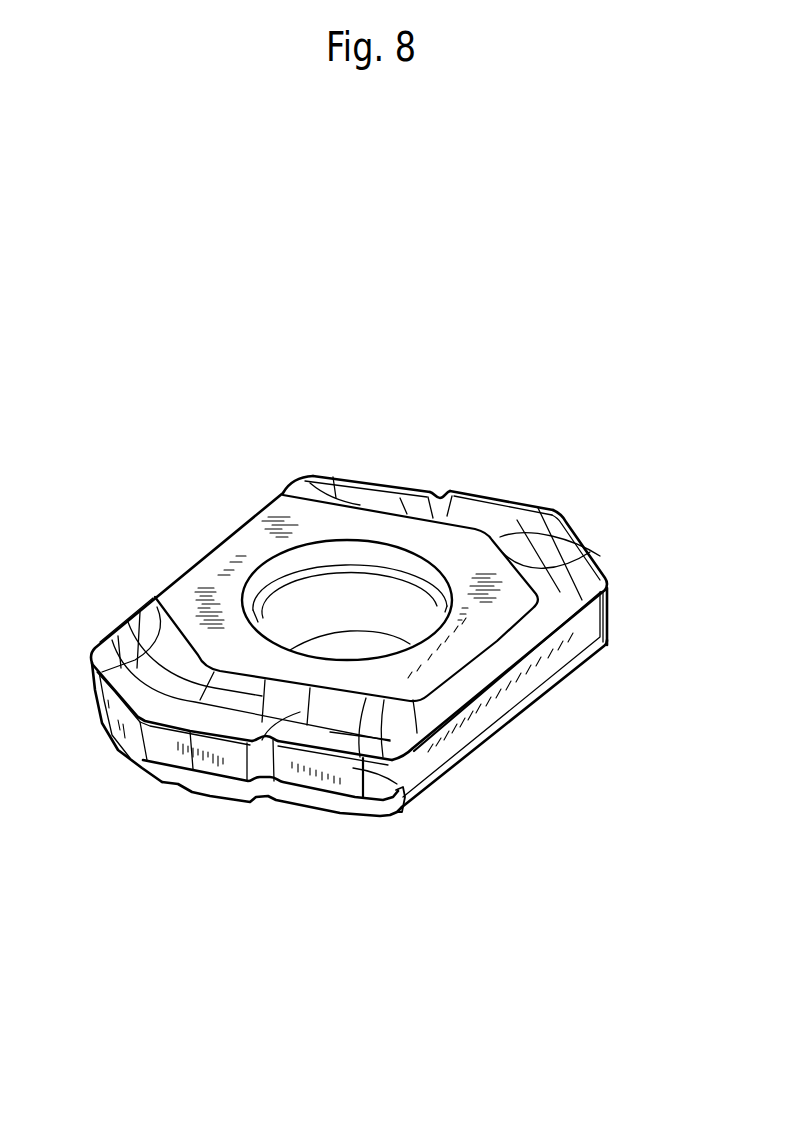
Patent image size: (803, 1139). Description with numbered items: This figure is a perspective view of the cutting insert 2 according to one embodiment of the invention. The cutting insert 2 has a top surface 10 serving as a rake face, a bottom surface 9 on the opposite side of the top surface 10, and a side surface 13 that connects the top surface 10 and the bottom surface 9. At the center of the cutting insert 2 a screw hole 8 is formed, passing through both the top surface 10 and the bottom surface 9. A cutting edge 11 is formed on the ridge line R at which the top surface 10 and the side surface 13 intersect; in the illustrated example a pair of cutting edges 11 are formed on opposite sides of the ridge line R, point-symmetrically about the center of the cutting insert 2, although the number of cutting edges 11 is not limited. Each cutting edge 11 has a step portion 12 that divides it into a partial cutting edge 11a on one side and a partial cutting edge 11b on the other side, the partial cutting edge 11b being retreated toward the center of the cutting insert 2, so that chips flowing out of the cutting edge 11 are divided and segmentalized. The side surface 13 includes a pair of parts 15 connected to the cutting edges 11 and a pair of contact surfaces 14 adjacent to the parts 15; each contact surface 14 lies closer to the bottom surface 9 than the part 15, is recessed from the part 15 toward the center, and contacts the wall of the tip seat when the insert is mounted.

The cutting insert 2 is at (156, 534).
The screw hole 8 is at (265, 584).
The bottom surface 9 is at (482, 735).
The top surface 10 is at (493, 558).
The cutting edge 11 is at (602, 458).
The partial cutting edge 11a is at (508, 498).
The partial cutting edge 11b is at (373, 482).
The step portion 12 is at (440, 490).
The side surface 13 is at (548, 692).
The contact surface 14 is at (367, 805).
The part 15 is at (400, 813).
The ridge line R is at (608, 574).